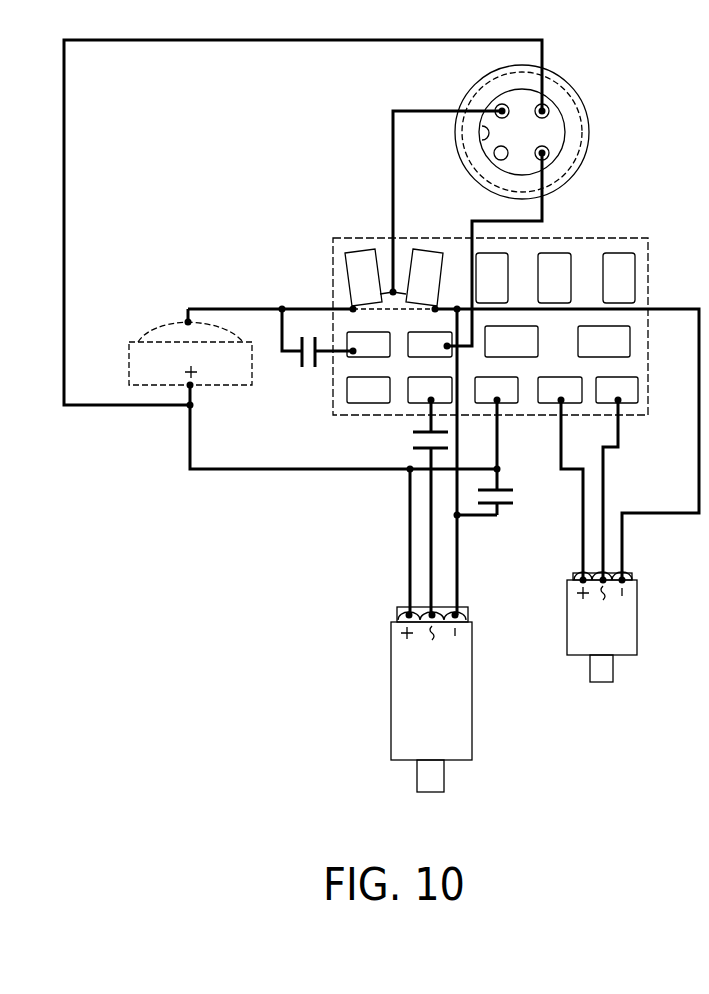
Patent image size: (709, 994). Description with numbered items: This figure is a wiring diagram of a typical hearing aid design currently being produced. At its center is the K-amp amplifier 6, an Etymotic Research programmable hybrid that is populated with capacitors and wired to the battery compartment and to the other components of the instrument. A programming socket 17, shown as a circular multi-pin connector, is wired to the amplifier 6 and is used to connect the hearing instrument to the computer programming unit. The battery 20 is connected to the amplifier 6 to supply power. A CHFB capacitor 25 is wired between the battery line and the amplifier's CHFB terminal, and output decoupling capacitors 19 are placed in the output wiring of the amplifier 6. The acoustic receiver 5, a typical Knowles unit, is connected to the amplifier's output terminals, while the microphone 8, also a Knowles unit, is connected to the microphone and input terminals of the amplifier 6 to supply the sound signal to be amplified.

The programming socket 17 is at (565, 112).
The K-amp amplifier 6 is at (583, 262).
The battery 20 is at (172, 363).
The CHFB capacitor 25 is at (289, 358).
The output decoupling capacitor 19 is at (404, 442).
The receiver 5 is at (438, 715).
The microphone 8 is at (605, 623).